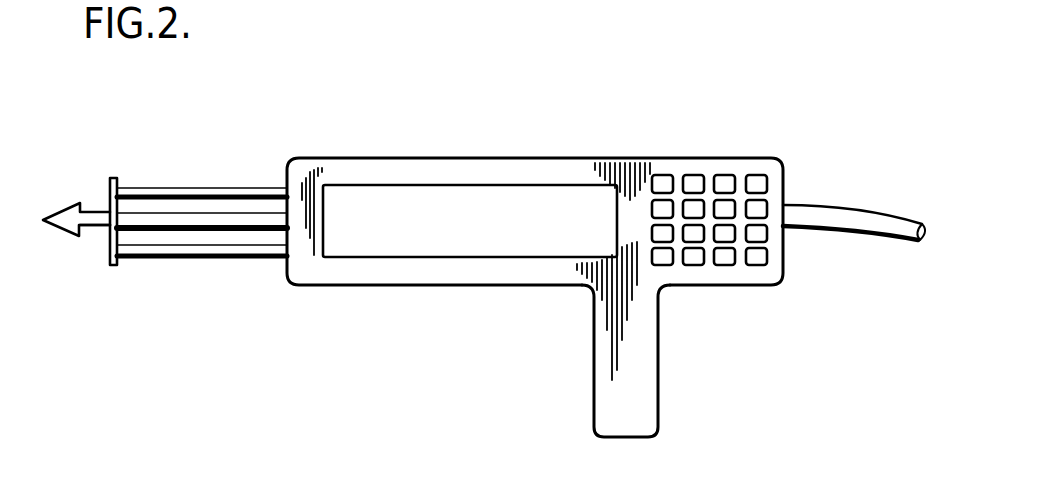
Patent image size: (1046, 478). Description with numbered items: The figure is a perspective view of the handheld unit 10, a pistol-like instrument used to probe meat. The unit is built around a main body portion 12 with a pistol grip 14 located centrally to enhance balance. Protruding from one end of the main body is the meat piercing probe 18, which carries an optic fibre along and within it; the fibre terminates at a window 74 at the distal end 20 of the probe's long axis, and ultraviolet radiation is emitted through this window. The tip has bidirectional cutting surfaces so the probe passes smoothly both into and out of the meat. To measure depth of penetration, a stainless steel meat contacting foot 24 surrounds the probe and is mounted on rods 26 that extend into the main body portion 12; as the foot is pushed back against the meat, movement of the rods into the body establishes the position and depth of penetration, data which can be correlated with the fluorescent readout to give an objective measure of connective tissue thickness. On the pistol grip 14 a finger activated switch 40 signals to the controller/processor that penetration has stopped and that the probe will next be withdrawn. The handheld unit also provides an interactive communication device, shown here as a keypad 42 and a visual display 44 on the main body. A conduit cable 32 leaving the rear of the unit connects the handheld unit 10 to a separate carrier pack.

The handheld unit 10 is at (365, 142).
The main body portion 12 is at (399, 266).
The pistol grip 14 is at (638, 377).
The meat piercing probe 18 is at (163, 224).
The distal end 20 is at (88, 207).
The meat contacting foot 24 is at (117, 177).
The rods 26 is at (217, 190).
The conduit cable 32 is at (852, 215).
The finger activated switch 40 is at (594, 310).
The keypad 42 is at (447, 208).
The visual display 44 is at (723, 208).
The window 74 is at (95, 234).